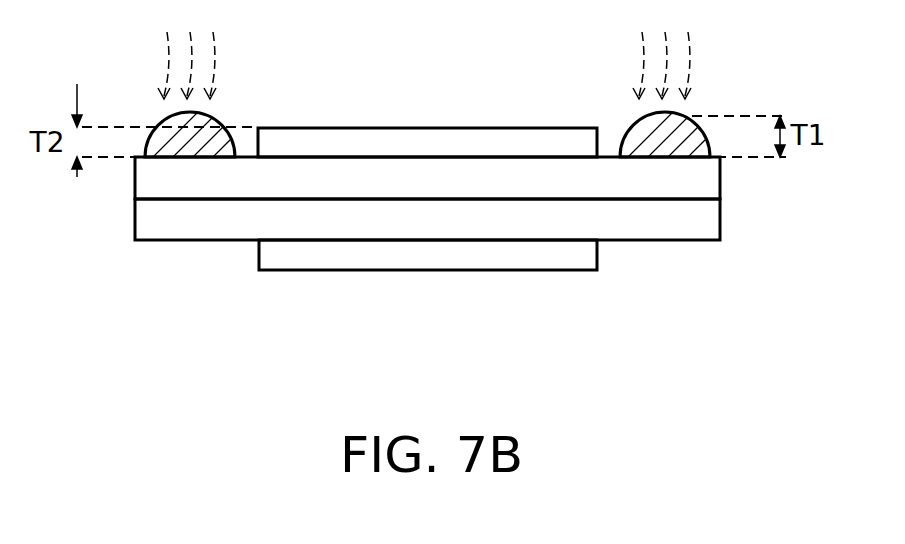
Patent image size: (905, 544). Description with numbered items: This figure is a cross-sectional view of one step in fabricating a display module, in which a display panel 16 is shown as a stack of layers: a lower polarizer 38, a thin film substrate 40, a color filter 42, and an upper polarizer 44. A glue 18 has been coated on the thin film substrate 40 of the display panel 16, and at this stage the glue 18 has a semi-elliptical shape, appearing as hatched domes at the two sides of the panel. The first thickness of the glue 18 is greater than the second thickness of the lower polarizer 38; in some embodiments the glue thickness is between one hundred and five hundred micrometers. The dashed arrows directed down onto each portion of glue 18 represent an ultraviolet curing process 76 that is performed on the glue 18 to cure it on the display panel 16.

The display panel 16 is at (427, 138).
The lower polarizer 38 is at (357, 143).
The thin film substrate 40 is at (416, 180).
The color filter 42 is at (475, 220).
The upper polarizer 44 is at (333, 50).
The glue 18 is at (190, 143).
The ultraviolet curing process 76 is at (165, 63).